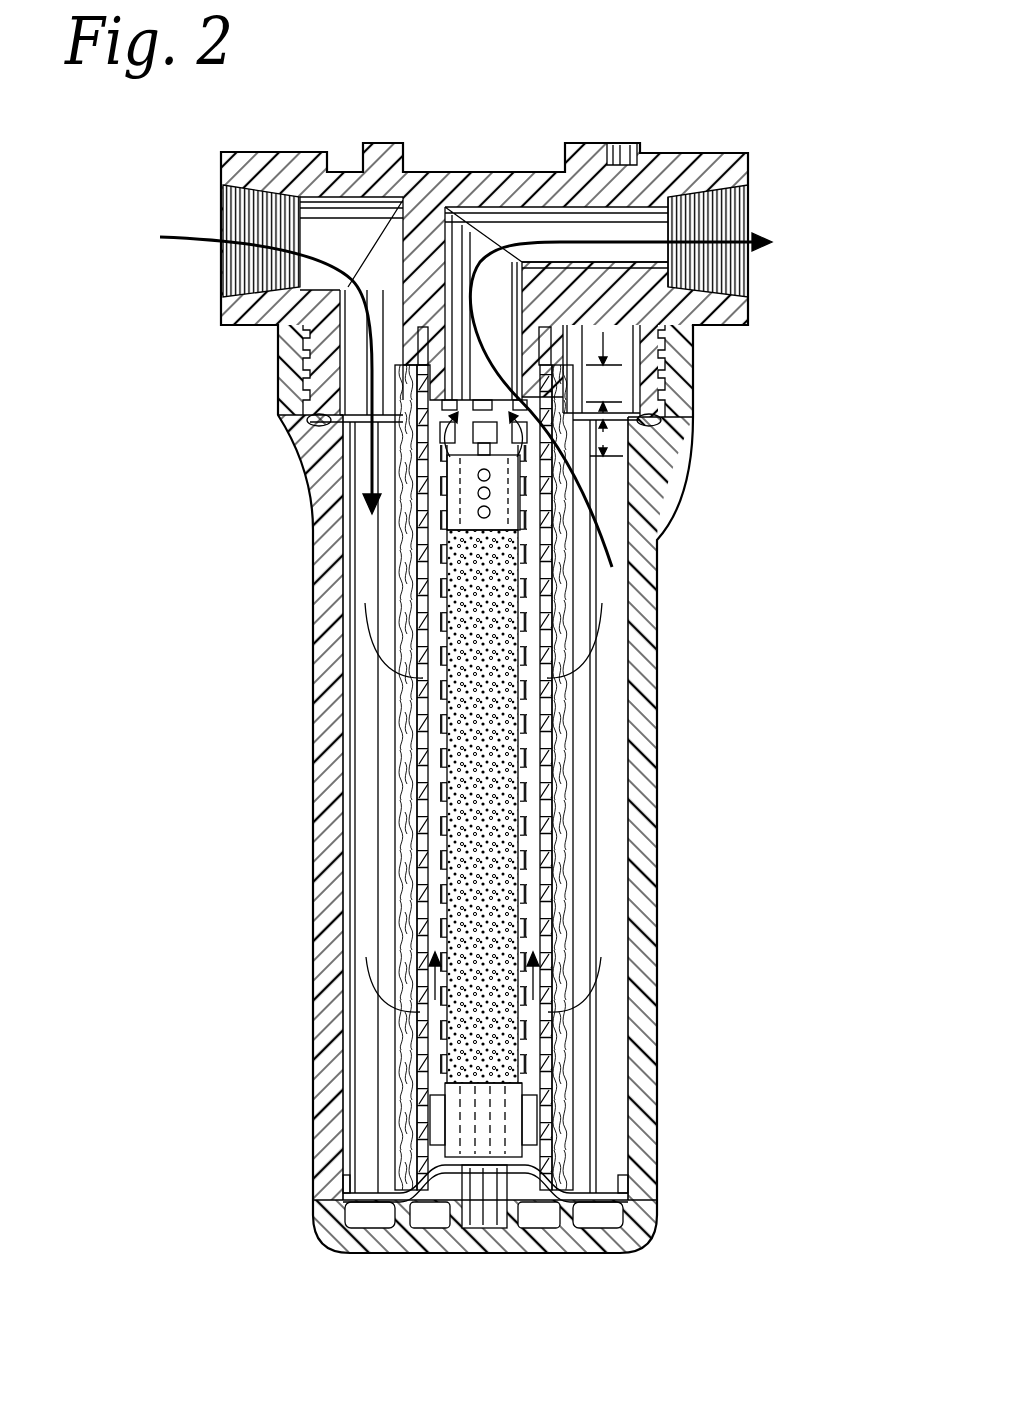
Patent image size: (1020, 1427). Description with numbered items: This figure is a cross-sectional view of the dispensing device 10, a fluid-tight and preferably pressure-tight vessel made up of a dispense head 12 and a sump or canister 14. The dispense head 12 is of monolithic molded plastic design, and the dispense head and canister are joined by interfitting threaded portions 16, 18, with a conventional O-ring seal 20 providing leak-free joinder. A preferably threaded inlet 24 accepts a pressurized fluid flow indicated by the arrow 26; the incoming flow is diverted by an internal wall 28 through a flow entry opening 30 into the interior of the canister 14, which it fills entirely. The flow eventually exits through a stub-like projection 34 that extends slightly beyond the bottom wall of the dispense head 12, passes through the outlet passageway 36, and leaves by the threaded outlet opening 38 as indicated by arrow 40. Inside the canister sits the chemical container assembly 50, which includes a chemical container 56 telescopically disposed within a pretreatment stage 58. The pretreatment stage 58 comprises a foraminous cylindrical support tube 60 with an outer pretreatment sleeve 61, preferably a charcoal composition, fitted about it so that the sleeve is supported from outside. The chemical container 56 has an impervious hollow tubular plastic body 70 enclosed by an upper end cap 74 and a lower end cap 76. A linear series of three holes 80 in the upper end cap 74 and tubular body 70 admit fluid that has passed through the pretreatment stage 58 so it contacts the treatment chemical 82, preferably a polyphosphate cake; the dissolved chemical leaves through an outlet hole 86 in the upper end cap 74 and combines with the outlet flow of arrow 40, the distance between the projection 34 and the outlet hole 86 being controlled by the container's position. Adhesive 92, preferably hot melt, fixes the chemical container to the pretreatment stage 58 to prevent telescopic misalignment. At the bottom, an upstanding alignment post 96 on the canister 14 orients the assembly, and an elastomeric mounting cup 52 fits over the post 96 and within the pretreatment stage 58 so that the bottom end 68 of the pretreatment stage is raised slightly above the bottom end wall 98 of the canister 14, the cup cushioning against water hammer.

The dispensing device 10 is at (742, 148).
The dispense head 12 is at (418, 170).
The canister 14 is at (660, 553).
The threaded portion 16 is at (628, 373).
The threaded portion 18 is at (697, 418).
The O-ring seal 20 is at (322, 416).
The inlet 24 is at (225, 266).
The arrow 26 is at (188, 250).
The internal wall 28 is at (400, 240).
The flow entry opening 30 is at (350, 410).
The projection 34 is at (482, 270).
The outlet passageway 36 is at (653, 258).
The threaded outlet opening 38 is at (730, 277).
The arrow 40 is at (770, 214).
The chemical container assembly 50 is at (535, 1095).
The mounting cup 52 is at (625, 1185).
The chemical container 56 is at (528, 763).
The pretreatment stage 58 is at (573, 610).
The support tube 60 is at (585, 700).
The outer pretreatment sleeve 61 is at (560, 653).
The bottom end 68 is at (400, 1165).
The tubular body 70 is at (443, 630).
The upper end cap 74 is at (457, 512).
The lower end cap 76 is at (462, 1112).
The holes 80 is at (490, 512).
The treatment chemical 82 is at (457, 863).
The outlet hole 86 is at (490, 405).
The adhesive 92 is at (533, 1123).
The alignment post 96 is at (510, 1185).
The bottom end wall 98 is at (580, 1245).